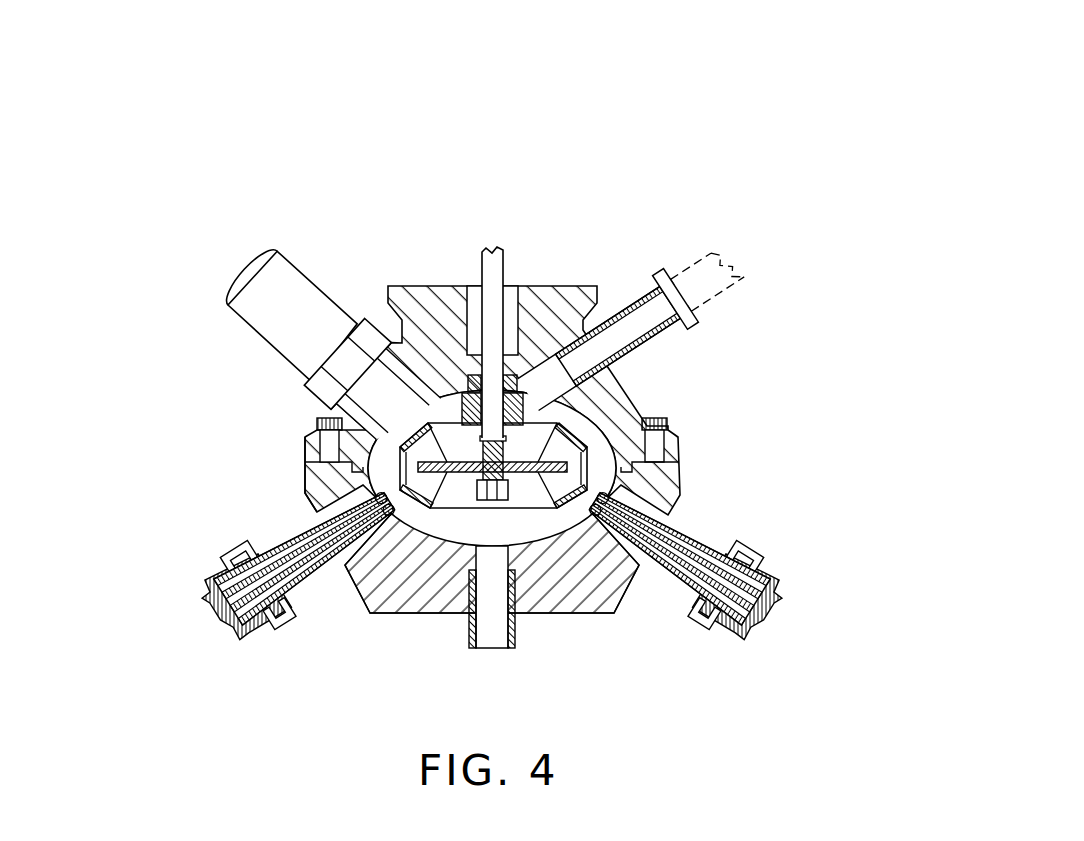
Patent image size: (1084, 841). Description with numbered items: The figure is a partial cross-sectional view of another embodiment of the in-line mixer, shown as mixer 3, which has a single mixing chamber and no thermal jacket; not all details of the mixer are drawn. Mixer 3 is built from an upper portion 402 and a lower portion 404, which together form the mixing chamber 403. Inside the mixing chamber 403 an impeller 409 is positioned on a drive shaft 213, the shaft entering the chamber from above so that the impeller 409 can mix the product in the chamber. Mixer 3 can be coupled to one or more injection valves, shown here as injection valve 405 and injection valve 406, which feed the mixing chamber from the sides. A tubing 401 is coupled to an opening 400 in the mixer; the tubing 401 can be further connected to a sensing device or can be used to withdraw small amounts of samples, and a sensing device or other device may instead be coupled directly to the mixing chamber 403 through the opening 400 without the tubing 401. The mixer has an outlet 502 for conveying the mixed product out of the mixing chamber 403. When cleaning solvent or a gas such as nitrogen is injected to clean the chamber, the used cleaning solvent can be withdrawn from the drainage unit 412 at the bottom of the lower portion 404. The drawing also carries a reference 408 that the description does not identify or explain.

The mixer 3 is at (589, 123).
The drive shaft 213 is at (507, 265).
The opening 400 is at (393, 348).
The tubing 401 is at (266, 320).
The upper portion 402 is at (355, 448).
The mixing chamber 403 is at (387, 474).
The lower portion 404 is at (415, 588).
The injection valve 405 is at (762, 560).
The injection valve 406 is at (232, 560).
The inlet passage 408 is at (600, 441).
The impeller 409 is at (578, 460).
The drainage unit 412 is at (496, 640).
The outlet 502 is at (641, 288).